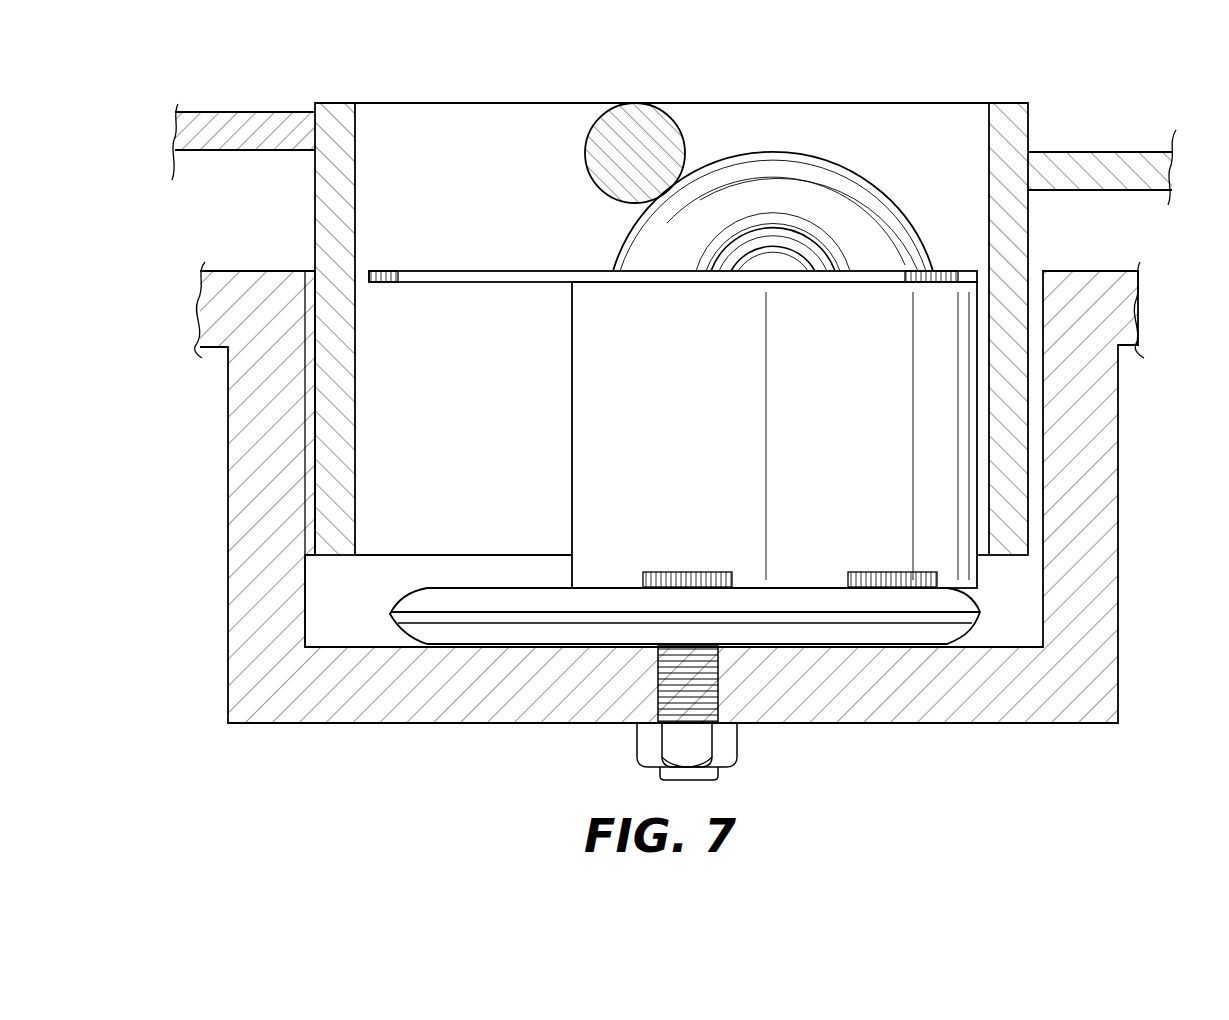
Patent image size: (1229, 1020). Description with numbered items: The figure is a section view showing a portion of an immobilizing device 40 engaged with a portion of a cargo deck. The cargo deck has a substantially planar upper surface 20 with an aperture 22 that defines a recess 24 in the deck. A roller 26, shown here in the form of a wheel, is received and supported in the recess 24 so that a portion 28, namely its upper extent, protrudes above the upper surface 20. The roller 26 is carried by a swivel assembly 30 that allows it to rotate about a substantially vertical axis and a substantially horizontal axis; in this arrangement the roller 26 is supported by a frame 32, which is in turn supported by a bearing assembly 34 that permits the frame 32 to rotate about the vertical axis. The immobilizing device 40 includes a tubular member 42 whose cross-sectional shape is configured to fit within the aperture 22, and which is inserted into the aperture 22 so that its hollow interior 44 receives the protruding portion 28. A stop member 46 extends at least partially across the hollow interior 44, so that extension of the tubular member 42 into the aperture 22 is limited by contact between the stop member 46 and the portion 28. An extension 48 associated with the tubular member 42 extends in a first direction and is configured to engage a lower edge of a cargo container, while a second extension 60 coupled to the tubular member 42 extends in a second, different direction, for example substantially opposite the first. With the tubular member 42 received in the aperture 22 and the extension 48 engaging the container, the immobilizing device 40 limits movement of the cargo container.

The upper surface 20 is at (227, 270).
The aperture 22 is at (305, 287).
The recess 24 is at (336, 612).
The roller 26 is at (857, 208).
The portion 28 is at (868, 153).
The swivel assembly 30 is at (508, 401).
The frame 32 is at (828, 424).
The bearing assembly 34 is at (506, 600).
The immobilizing device 40 is at (657, 295).
The tubular member 42 is at (995, 251).
The hollow interior 44 is at (423, 130).
The stop member 46 is at (648, 125).
The extension 48 is at (238, 130).
The second extension 60 is at (1120, 162).